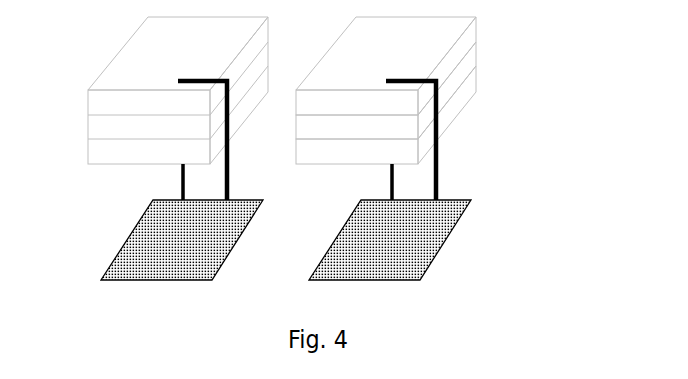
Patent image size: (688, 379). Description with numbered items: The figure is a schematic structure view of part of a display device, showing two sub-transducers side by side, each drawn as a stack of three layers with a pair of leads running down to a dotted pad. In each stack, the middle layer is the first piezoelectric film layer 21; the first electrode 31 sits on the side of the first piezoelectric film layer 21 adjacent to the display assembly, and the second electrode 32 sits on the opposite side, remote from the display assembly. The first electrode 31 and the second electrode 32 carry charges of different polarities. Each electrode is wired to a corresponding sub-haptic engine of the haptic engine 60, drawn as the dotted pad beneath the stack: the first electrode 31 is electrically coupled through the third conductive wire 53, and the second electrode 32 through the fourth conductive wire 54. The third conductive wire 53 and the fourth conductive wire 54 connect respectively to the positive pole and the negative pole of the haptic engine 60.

The first electrode 31 is at (438, 33).
The first piezoelectric film layer 21 is at (452, 80).
The second electrode 32 is at (445, 119).
The third conductive wire 53 is at (181, 188).
The fourth conductive wire 54 is at (438, 178).
The haptic engine 60 is at (412, 237).